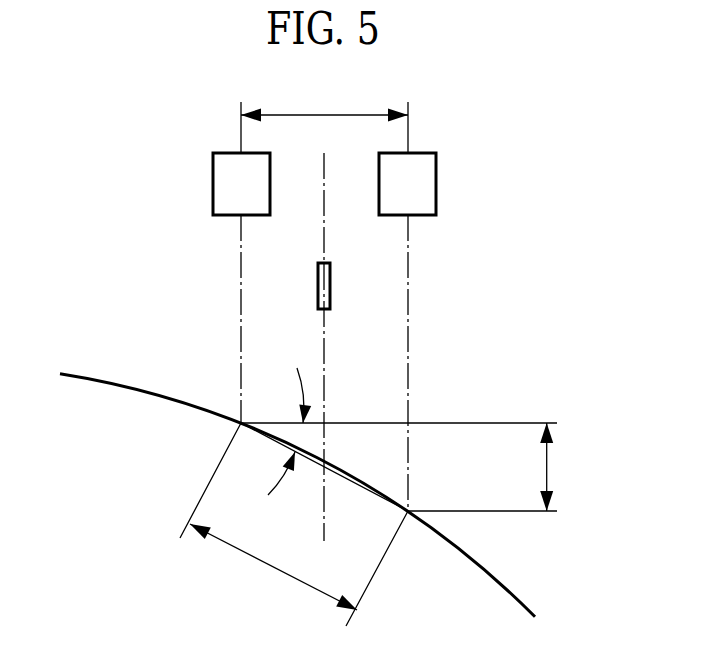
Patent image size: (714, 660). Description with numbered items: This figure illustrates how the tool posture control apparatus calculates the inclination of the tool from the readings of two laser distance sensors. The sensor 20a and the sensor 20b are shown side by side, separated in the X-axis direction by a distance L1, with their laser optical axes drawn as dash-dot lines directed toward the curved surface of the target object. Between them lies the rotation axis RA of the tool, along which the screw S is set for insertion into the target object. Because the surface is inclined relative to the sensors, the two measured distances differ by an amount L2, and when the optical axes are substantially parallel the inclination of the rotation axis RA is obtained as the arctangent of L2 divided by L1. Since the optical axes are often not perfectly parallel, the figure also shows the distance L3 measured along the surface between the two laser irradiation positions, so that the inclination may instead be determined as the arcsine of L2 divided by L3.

The sensor 20a is at (213, 184).
The sensor 20b is at (436, 183).
The screw S is at (331, 284).
The rotation axis RA is at (324, 358).
The distance L1 is at (324, 111).
The difference L2 is at (410, 467).
The distance L3 is at (294, 524).